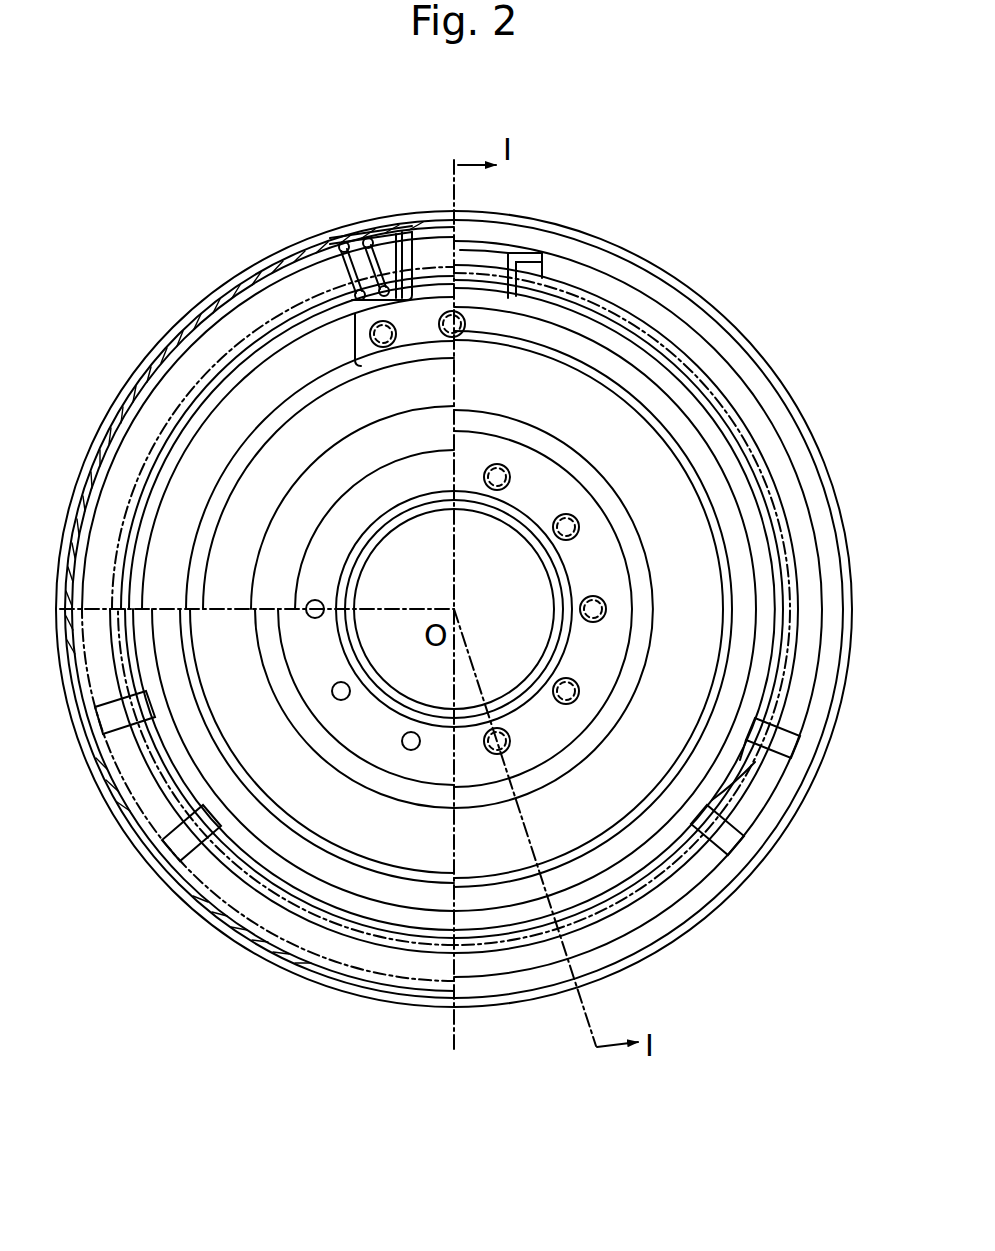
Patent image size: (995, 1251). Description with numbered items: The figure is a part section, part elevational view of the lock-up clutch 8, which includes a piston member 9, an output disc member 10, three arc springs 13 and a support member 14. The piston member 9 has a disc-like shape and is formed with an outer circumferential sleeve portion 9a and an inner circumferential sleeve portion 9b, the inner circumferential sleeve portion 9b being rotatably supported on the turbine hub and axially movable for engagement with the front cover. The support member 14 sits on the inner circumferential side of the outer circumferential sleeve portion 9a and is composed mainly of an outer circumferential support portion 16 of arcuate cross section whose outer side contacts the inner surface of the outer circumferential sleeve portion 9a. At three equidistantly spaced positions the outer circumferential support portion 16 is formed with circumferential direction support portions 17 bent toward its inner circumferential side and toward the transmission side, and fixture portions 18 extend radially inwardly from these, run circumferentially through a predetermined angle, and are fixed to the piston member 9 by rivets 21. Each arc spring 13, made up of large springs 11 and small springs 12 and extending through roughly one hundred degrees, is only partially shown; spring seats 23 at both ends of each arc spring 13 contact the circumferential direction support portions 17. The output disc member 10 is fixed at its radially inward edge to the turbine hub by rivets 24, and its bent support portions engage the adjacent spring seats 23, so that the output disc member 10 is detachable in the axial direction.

The lock-up clutch 8 is at (659, 160).
The piston member 9 is at (285, 437).
The outer circumferential sleeve portion 9a is at (146, 362).
The inner circumferential sleeve portion 9b is at (381, 537).
The output disc member 10 is at (558, 408).
The large spring 11 is at (344, 243).
The small spring 12 is at (367, 239).
The arc spring 13 is at (372, 126).
The support member 14 is at (720, 318).
The outer circumferential support portion 16 is at (748, 372).
The circumferential direction support portion 17 is at (755, 790).
The fixture portion 18 is at (410, 330).
The rivet 21 is at (365, 318).
The spring seat 23 is at (397, 238).
The rivet 24 is at (500, 464).